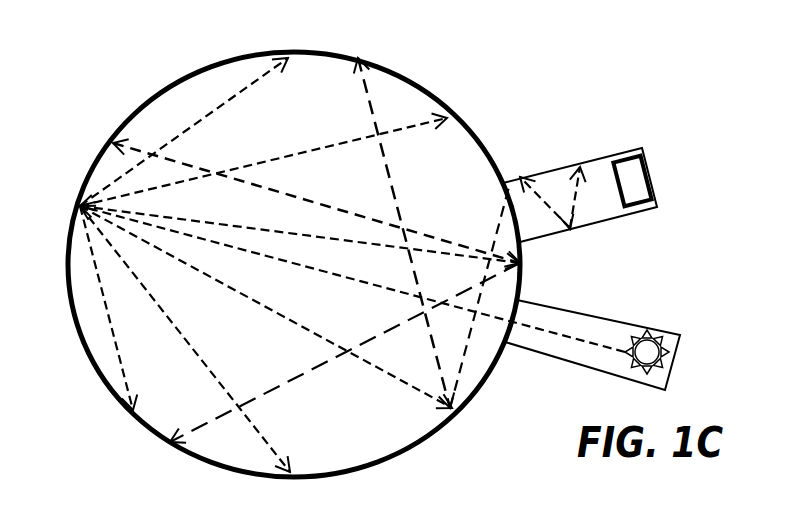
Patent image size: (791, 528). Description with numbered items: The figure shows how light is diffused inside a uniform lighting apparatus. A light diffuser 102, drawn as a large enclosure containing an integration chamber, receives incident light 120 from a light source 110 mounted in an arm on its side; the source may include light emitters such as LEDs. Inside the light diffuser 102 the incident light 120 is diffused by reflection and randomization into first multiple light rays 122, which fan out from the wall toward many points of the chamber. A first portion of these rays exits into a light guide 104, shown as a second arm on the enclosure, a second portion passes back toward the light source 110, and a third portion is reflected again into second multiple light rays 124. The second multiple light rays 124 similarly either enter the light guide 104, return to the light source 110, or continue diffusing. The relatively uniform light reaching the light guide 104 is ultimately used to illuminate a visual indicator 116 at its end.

The light diffuser 102 is at (74, 324).
The light guide 104 is at (653, 176).
The light source 110 is at (672, 376).
The visual indicator 116 is at (623, 172).
The incident light 120 is at (572, 340).
The first multiple light rays 122 is at (190, 333).
The second multiple light rays 124 is at (500, 222).